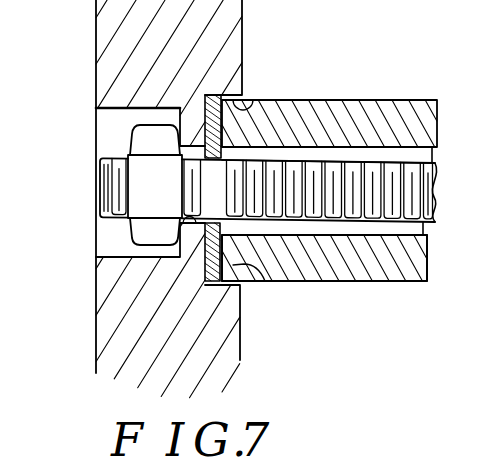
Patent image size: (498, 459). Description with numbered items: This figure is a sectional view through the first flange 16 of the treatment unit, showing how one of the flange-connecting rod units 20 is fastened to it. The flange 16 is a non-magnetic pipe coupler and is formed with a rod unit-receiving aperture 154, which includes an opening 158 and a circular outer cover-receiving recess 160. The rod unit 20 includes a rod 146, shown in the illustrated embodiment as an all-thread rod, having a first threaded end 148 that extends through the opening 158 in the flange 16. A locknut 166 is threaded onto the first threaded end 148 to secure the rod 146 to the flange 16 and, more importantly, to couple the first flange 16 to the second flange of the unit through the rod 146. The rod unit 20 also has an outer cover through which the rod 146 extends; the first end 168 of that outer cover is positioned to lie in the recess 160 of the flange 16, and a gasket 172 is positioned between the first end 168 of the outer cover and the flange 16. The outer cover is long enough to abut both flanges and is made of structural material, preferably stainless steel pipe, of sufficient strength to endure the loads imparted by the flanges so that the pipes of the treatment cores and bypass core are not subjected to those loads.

The flange 16 is at (223, 10).
The flange-connecting rod unit 20 is at (318, 298).
The rod 146 is at (412, 212).
The first threaded end 148 is at (204, 184).
The rod unit-receiving aperture 154 is at (112, 232).
The opening 158 is at (193, 222).
The circular outer cover-receiving recess 160 is at (266, 112).
The locknut 166 is at (145, 142).
The first end 168 is at (267, 281).
The gasket 172 is at (213, 98).